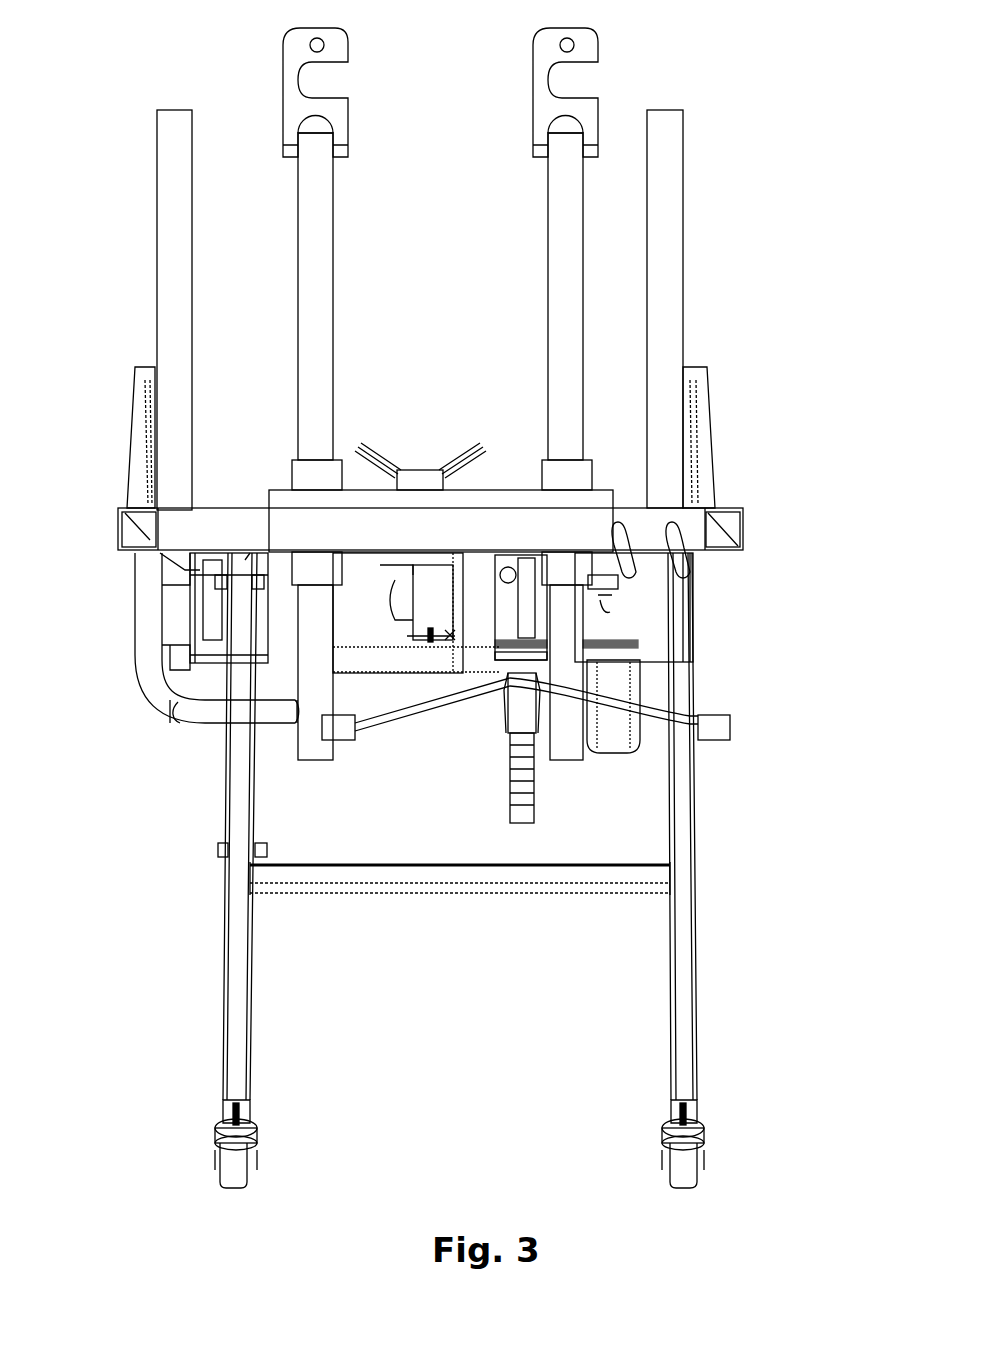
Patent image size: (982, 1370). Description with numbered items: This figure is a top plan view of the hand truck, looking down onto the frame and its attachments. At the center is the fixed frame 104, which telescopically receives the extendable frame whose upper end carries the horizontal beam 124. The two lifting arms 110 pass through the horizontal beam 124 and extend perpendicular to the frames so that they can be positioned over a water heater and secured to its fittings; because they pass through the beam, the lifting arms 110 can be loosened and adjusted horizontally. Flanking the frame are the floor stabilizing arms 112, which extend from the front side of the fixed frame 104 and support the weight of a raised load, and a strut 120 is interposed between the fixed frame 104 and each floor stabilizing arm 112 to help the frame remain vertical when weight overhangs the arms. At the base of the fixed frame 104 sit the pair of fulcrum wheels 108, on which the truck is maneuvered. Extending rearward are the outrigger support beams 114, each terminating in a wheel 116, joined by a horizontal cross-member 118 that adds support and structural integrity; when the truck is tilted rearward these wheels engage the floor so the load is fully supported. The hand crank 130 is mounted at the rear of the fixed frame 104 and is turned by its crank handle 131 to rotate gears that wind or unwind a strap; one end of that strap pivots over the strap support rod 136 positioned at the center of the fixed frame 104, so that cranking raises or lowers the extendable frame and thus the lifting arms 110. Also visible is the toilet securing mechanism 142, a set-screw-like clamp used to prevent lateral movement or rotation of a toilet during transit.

The fixed frame 104 is at (718, 530).
The fulcrum wheels 108 is at (615, 740).
The lifting arms 110 is at (312, 236).
The floor stabilizing arm 112 is at (160, 216).
The outrigger support beam 114 is at (240, 1055).
The wheel 116 is at (230, 1172).
The horizontal cross-member 118 is at (452, 880).
The strut 120 is at (145, 482).
The horizontal beam 124 is at (458, 531).
The hand crank 130 is at (728, 725).
The crank handle 131 is at (497, 775).
The strap support rod 136 is at (425, 633).
The toilet securing mechanism 142 is at (410, 460).